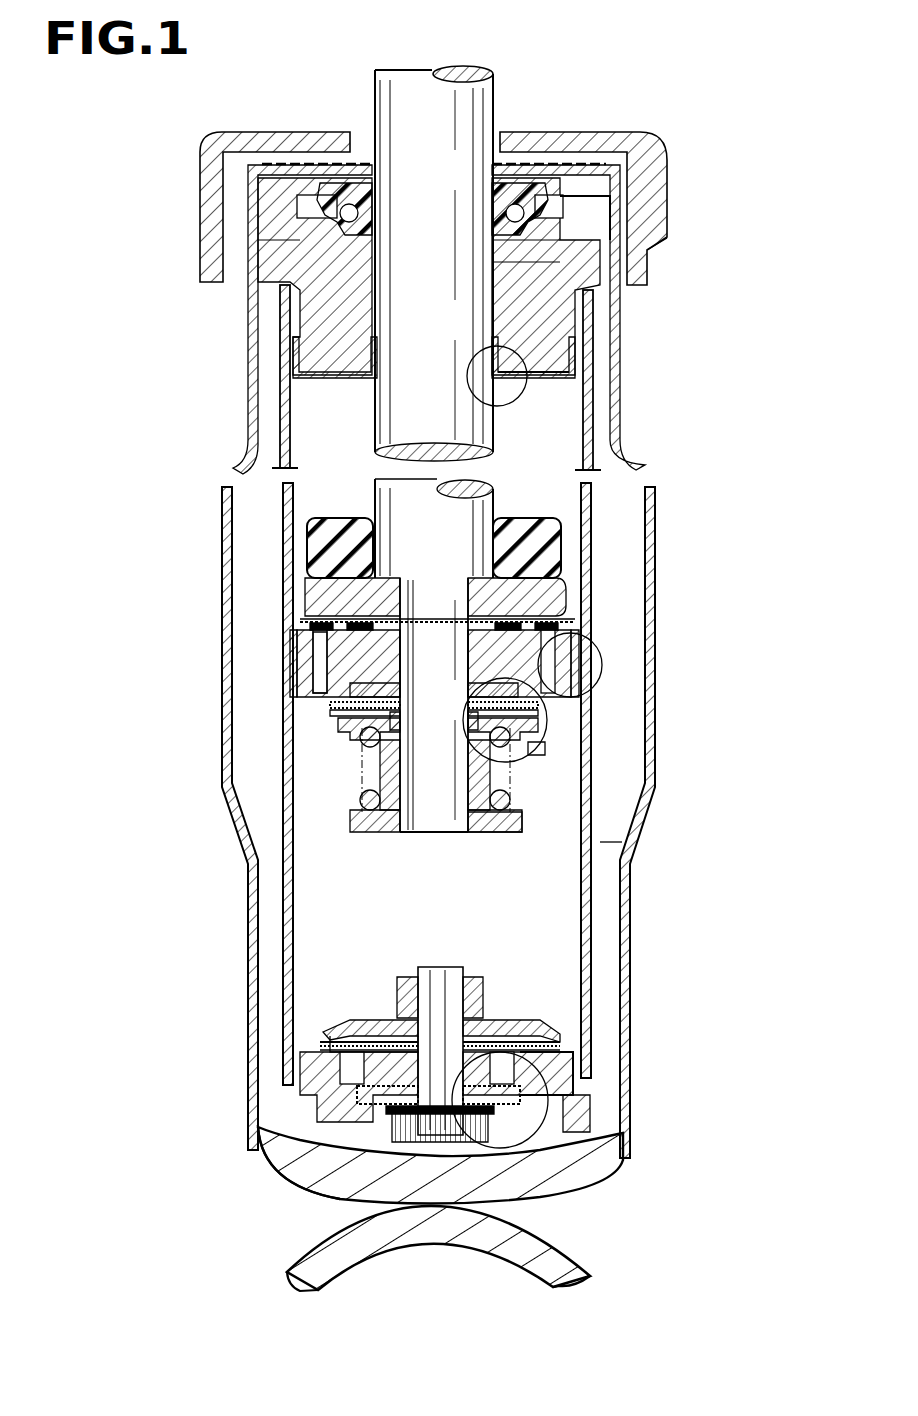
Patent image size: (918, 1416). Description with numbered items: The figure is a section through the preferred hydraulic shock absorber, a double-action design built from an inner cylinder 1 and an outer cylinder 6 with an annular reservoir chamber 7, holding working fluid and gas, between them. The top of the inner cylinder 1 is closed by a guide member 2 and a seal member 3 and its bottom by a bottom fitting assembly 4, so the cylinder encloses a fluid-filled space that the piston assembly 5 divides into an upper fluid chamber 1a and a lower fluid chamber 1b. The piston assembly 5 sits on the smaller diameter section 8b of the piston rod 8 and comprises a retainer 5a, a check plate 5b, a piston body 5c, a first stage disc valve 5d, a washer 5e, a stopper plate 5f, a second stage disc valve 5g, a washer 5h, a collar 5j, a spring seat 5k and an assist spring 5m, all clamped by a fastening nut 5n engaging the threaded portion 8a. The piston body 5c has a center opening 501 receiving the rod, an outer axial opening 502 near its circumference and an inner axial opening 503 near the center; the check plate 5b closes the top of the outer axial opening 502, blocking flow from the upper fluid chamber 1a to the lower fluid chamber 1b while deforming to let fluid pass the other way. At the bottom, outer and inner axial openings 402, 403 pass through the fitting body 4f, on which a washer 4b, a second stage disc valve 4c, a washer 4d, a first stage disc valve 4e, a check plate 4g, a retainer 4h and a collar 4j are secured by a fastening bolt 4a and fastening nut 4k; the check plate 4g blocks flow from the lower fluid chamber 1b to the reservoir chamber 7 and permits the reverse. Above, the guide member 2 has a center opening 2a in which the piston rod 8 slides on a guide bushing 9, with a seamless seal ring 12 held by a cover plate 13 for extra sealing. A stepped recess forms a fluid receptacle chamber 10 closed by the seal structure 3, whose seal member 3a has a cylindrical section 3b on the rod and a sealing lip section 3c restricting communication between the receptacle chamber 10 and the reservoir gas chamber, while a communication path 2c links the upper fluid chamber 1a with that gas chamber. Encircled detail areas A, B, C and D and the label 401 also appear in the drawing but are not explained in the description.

The piston rod 8 is at (372, 106).
The seal member 3 is at (530, 160).
The seal member 3a is at (372, 186).
The cylindrical section 3b is at (372, 224).
The sealing lip section 3c is at (616, 198).
The communication path 2c is at (622, 224).
The fluid receptacle chamber 10 is at (340, 240).
The center opening 2a is at (497, 263).
The guide member 2 is at (286, 300).
The guide bushing 9 is at (372, 333).
The seal ring 12 is at (496, 364).
The cover plate 13 is at (566, 386).
The detail region D is at (518, 400).
The outer cylinder 6 is at (225, 528).
The inner cylinder 1 is at (285, 560).
The upper fluid chamber 1a is at (352, 486).
The lower fluid chamber 1b is at (355, 918).
The annular reservoir chamber 7 is at (611, 830).
The piston assembly 5 is at (290, 643).
The retainer 5a is at (305, 584).
The check plate 5b is at (300, 622).
The outer axial opening 502 is at (310, 652).
The first stage disc valve 5d is at (345, 688).
The piston body 5c is at (380, 698).
The stopper plate 5f is at (372, 706).
The second stage disc valve 5g is at (380, 716).
The center opening 501 is at (403, 652).
The washer 5e is at (402, 702).
The washer 5h is at (382, 716).
The spring seat 5k is at (352, 730).
The collar 5j is at (382, 758).
The inner axial opening 503 is at (530, 662).
The detail region C is at (602, 670).
The detail region A is at (547, 722).
The assist spring 5m is at (520, 744).
The fastening nut 5n is at (514, 832).
The smaller diameter section 8b is at (436, 808).
The threaded portion 8a is at (502, 822).
The base valve bolt 401 is at (433, 1020).
The fastening nut 4k is at (474, 980).
The retainer 4h is at (345, 1020).
The check plate 4g is at (322, 1040).
The fitting body 4f is at (302, 1056).
The first stage disc valve 4e is at (306, 1064).
The bottom fitting assembly 4 is at (296, 1083).
The outer axial opening 402 is at (355, 1094).
The second stage disc valve 4c is at (335, 1110).
The inner axial opening 403 is at (556, 1070).
The detail region B is at (548, 1104).
The collar 4j is at (400, 1018).
The washer 4b is at (305, 1180).
The washer 4d is at (268, 1166).
The fastening bolt 4a is at (352, 1192).